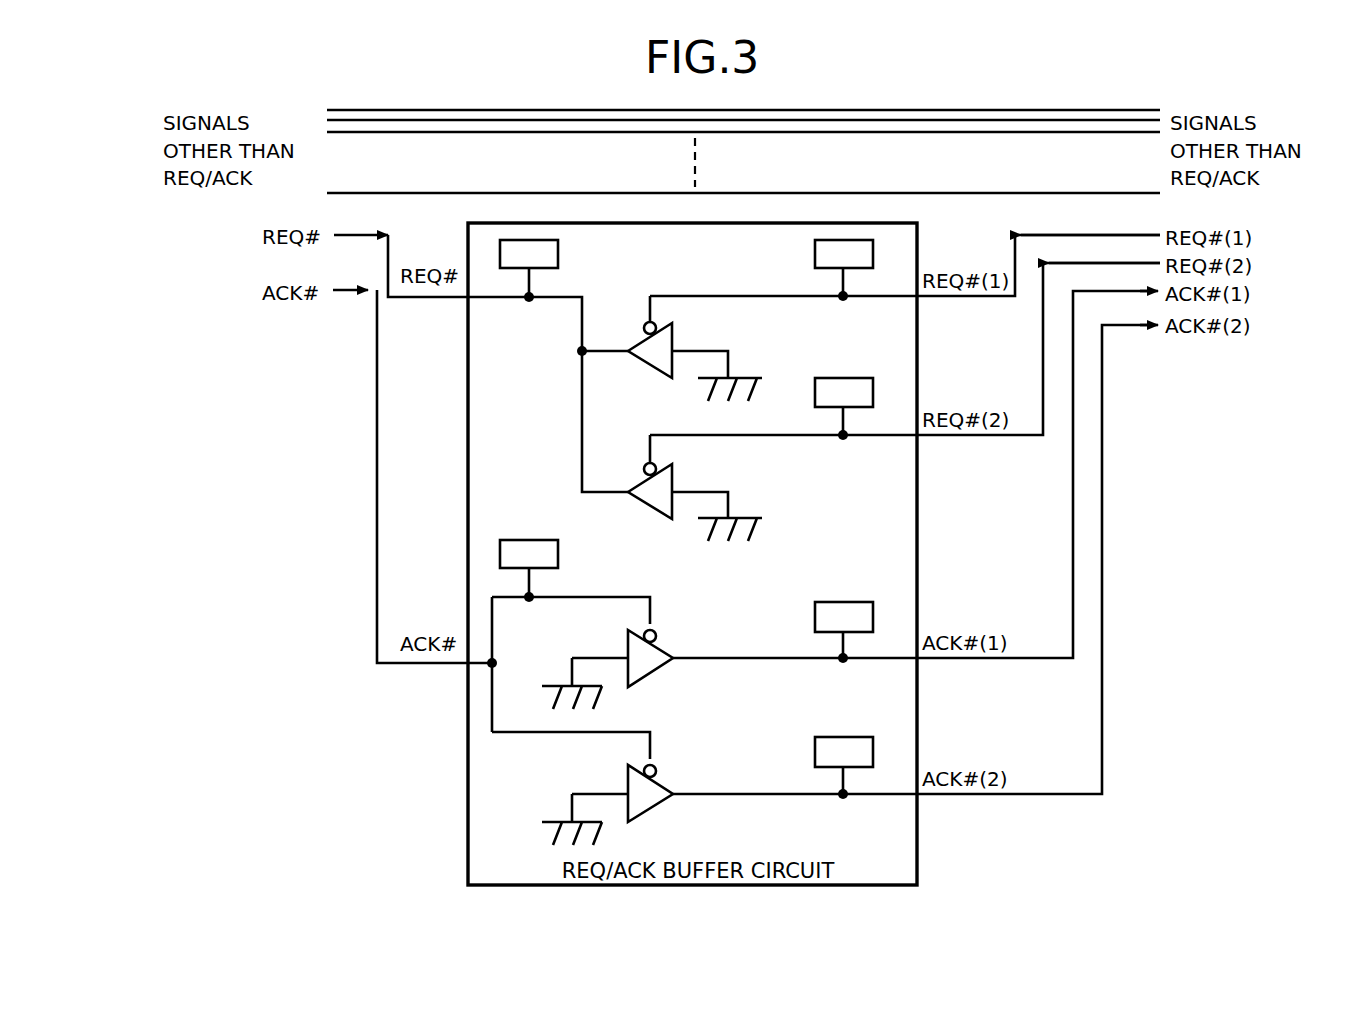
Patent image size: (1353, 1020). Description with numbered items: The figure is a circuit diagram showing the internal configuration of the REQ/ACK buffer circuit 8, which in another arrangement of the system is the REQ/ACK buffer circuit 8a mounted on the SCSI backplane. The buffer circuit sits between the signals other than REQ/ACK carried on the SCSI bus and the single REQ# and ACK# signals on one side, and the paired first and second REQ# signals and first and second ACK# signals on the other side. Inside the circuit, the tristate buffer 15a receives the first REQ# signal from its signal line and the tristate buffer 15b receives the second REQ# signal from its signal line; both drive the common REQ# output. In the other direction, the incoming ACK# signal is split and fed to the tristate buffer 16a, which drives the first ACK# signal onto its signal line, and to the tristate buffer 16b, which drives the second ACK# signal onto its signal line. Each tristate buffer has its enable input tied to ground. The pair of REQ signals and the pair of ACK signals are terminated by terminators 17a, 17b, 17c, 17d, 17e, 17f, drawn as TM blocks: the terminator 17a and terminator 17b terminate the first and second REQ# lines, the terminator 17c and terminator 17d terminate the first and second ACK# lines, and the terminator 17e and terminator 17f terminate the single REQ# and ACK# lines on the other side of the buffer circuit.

The REQ/ACK buffer circuit 8 is at (730, 554).
The REQ/ACK buffer circuit 8a is at (919, 238).
The tristate buffer 15a is at (674, 334).
The tristate buffer 15b is at (674, 475).
The tristate buffer 16a is at (660, 673).
The tristate buffer 16b is at (660, 809).
The terminator 17a is at (814, 254).
The terminator 17b is at (856, 377).
The terminator 17c is at (868, 590).
The terminator 17d is at (868, 725).
The terminator 17e is at (559, 255).
The terminator 17f is at (559, 555).